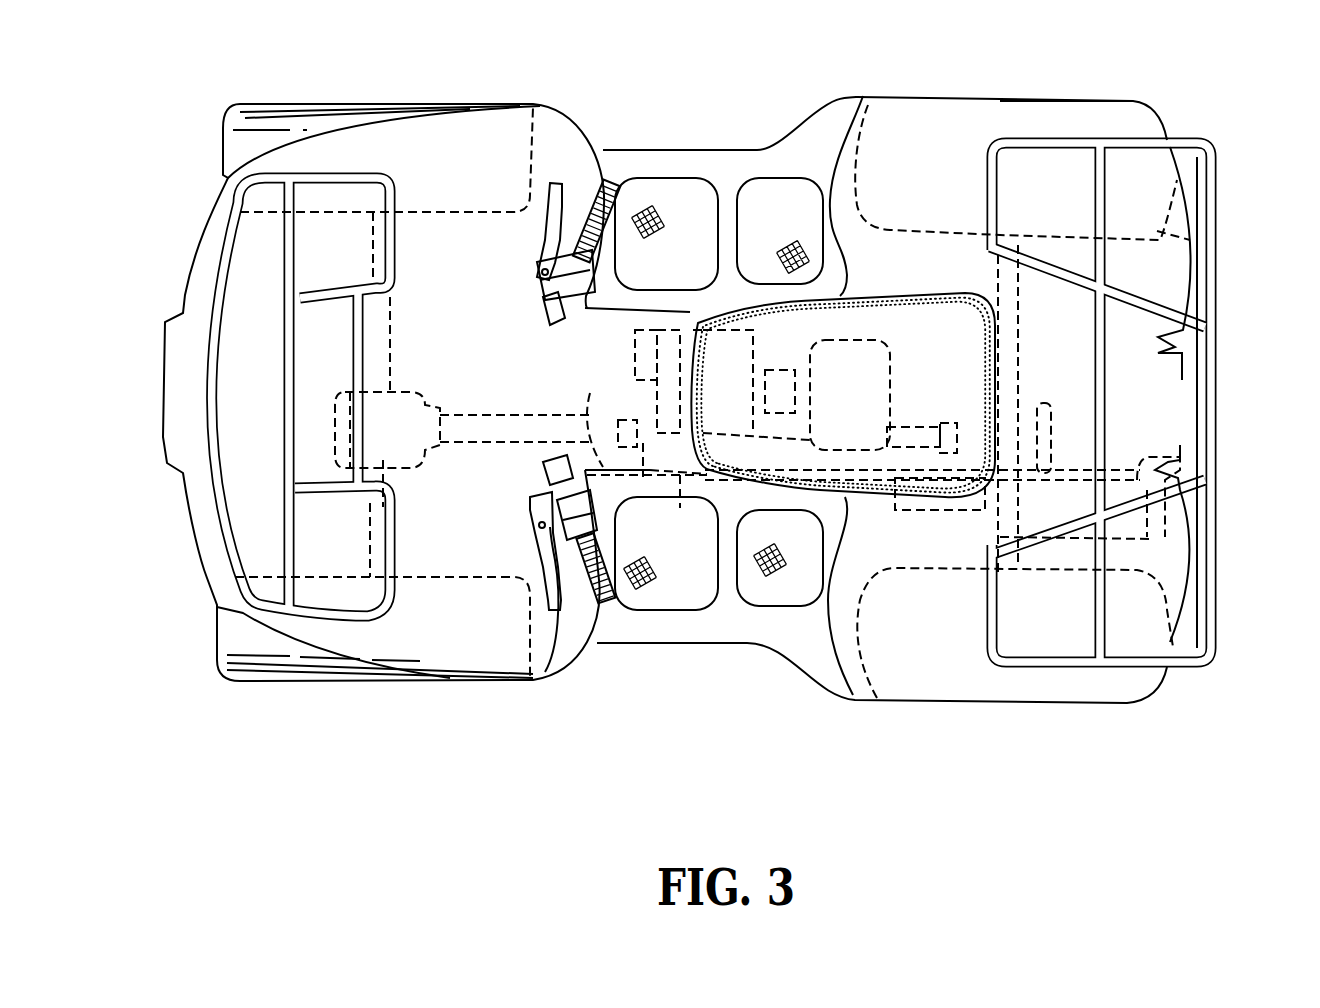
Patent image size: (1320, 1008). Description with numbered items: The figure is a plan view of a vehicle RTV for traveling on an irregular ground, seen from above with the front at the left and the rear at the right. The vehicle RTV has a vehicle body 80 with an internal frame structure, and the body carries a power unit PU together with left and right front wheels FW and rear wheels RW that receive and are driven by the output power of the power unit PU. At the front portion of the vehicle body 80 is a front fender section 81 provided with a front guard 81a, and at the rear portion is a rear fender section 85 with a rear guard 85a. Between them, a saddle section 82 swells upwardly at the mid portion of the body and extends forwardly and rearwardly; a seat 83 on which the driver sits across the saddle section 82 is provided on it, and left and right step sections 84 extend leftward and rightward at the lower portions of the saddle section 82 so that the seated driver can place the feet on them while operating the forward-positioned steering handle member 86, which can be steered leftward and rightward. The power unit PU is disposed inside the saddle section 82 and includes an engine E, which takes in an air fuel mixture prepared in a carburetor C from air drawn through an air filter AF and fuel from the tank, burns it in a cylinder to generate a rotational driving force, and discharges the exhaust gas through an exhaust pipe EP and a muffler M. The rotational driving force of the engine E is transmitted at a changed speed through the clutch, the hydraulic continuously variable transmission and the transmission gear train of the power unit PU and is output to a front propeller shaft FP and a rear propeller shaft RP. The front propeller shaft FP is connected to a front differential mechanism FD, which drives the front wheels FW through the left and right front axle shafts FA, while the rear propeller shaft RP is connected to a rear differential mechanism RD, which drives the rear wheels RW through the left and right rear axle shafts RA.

The vehicle body 80 is at (848, 97).
The front fender section 81 is at (243, 493).
The front guard 81a is at (210, 432).
The saddle section 82 is at (617, 325).
The seat 83 is at (908, 297).
The step section 84 is at (695, 198).
The rear fender section 85 is at (1167, 390).
The rear guard 85a is at (1218, 283).
The steering handle member 86 is at (587, 296).
The front wheel FW is at (223, 150).
The rear wheel RW is at (1222, 237).
The vehicle for traveling on an irregular ground RTV is at (1140, 88).
The power unit PU is at (745, 328).
The front axle shaft FA is at (385, 308).
The front differential mechanism FD is at (402, 393).
The front propeller shaft FP is at (483, 443).
The engine E is at (635, 378).
The exhaust pipe EP is at (683, 477).
The carburetor C is at (792, 350).
The air filter AF is at (893, 345).
The rear propeller shaft RP is at (915, 427).
The rear axle shaft RA is at (1022, 333).
The rear differential mechanism RD is at (1050, 430).
The muffler M is at (1183, 458).